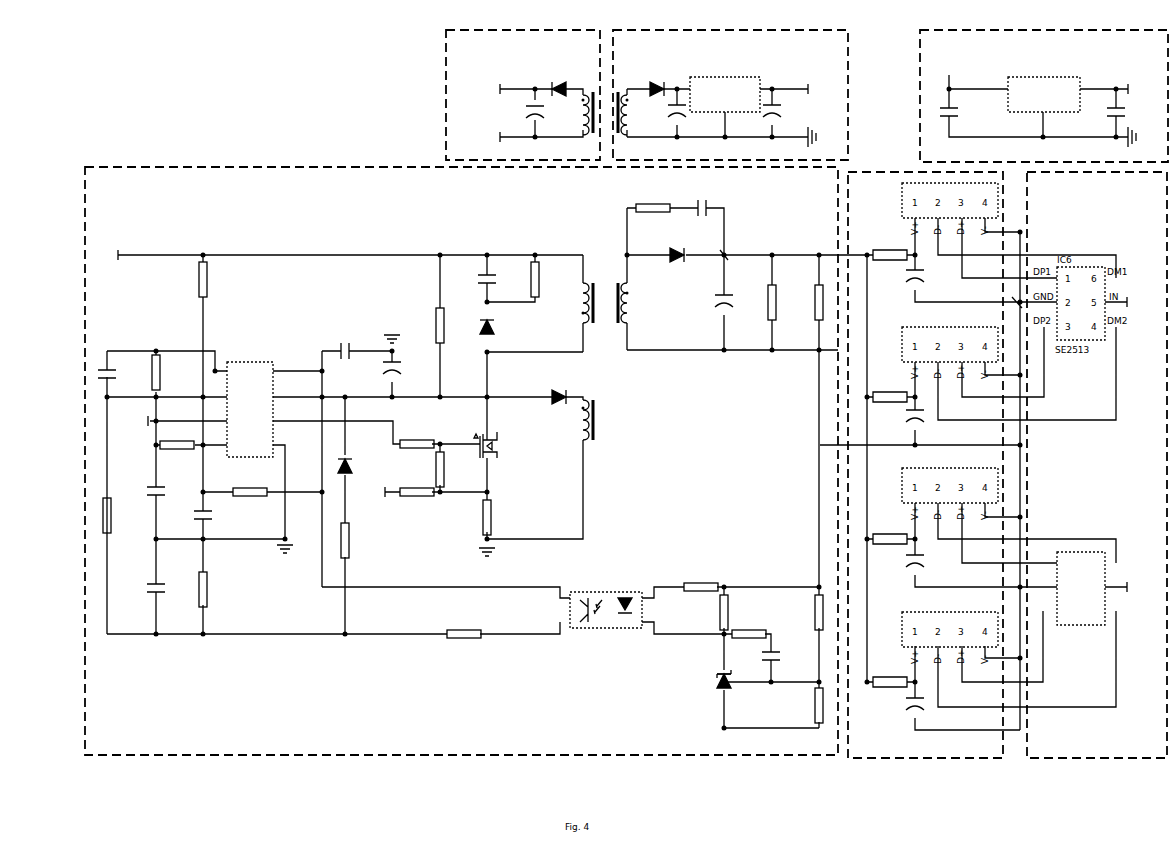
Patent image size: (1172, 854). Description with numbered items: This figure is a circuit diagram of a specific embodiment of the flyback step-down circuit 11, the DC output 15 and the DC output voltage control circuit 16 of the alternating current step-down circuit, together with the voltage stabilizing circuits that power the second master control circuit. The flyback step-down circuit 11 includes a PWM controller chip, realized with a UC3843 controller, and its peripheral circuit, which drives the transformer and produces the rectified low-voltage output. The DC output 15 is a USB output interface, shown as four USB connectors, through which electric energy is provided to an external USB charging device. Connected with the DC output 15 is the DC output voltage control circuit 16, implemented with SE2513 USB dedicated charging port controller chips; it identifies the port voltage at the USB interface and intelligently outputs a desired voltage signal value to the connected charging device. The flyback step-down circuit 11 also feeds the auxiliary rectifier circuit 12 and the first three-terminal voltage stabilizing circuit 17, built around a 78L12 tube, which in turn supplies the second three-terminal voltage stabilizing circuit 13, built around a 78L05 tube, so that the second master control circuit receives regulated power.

The flyback step-down circuit 11 is at (466, 461).
The first three-terminal voltage stabilizing circuit 12 is at (523, 95).
The second three-terminal voltage stabilizing circuit 13 is at (1044, 96).
The DC output 15 is at (968, 465).
The DC output voltage control circuit 16 is at (1097, 465).
The first three-terminal voltage stabilizing circuit 17 is at (730, 95).